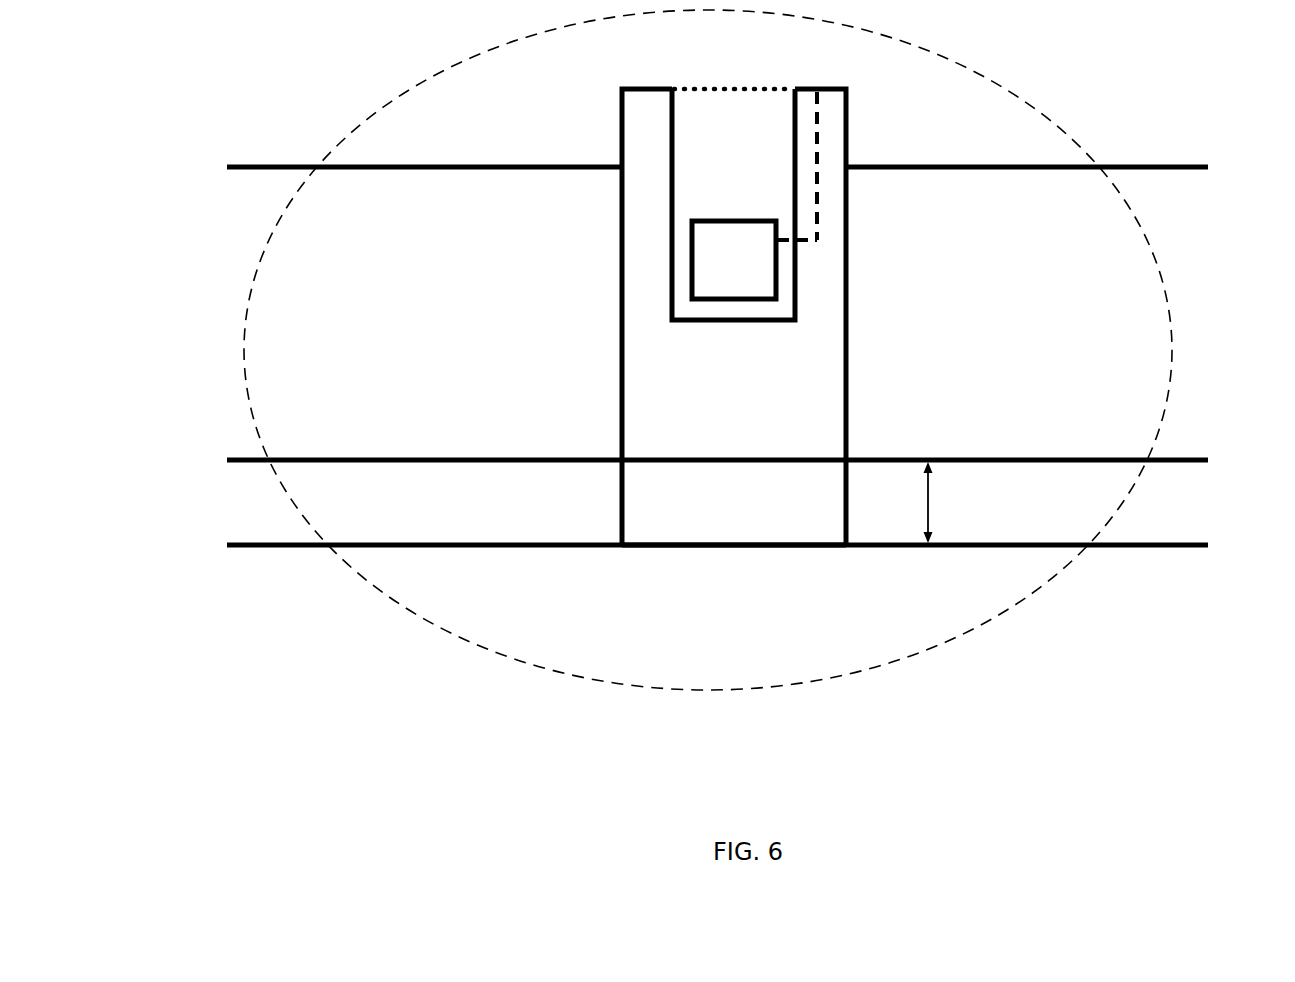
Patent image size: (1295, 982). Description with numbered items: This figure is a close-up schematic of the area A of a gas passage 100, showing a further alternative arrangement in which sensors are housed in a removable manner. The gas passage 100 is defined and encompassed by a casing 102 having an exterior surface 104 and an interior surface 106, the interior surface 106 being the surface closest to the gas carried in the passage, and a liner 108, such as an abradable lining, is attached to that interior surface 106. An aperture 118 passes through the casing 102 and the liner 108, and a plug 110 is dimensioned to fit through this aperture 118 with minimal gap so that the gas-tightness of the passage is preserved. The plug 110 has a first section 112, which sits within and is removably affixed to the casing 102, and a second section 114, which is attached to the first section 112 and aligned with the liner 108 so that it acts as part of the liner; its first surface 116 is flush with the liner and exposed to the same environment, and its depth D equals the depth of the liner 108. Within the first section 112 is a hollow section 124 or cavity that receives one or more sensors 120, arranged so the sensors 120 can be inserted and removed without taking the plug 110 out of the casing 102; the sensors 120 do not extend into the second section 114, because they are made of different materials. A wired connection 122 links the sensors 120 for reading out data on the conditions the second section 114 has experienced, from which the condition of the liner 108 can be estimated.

The area A is at (405, 97).
The gas passage 100 is at (621, 623).
The casing 102 is at (466, 338).
The exterior surface 104 is at (963, 167).
The interior surface 106 is at (333, 458).
The liner 108 is at (466, 513).
The plug 110 is at (847, 333).
The first section 112 is at (761, 415).
The second section 114 is at (759, 513).
The first surface 116 is at (747, 545).
The aperture 118 is at (620, 241).
The sensors 120 is at (756, 273).
The wired connection 122 is at (817, 143).
The hollow section 124 is at (733, 88).
The depth D is at (930, 500).